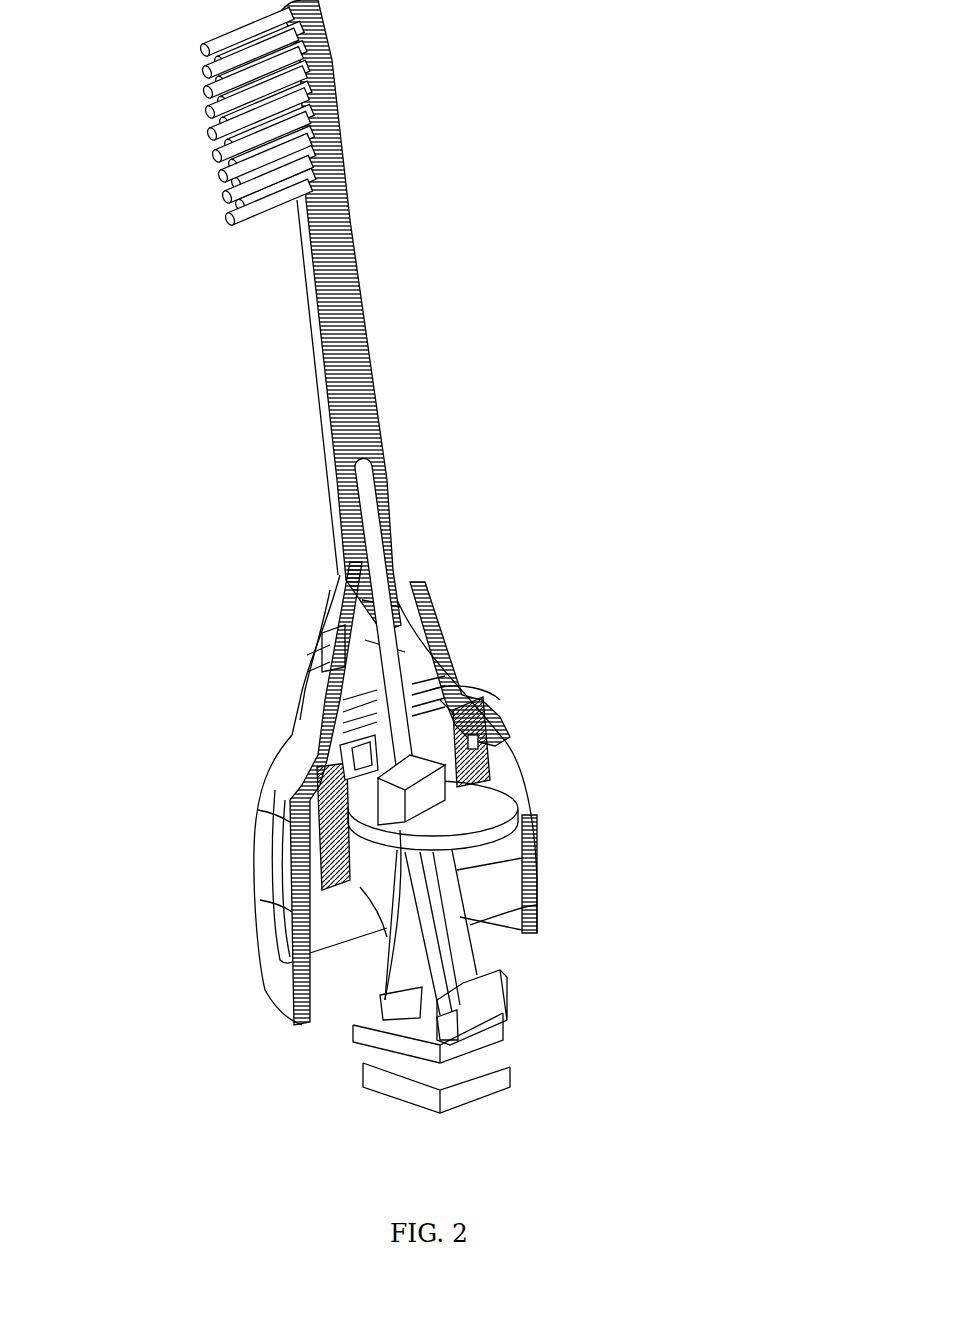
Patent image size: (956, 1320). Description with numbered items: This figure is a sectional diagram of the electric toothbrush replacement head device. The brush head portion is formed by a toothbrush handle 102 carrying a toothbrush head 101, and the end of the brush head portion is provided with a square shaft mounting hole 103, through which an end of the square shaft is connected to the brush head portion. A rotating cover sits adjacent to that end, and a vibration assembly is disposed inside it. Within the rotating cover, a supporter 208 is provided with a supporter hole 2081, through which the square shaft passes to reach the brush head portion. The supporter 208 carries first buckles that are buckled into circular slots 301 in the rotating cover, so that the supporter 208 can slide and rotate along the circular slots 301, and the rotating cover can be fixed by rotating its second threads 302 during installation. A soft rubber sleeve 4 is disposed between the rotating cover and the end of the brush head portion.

The toothbrush head 101 is at (335, 152).
The toothbrush handle 102 is at (373, 406).
The square shaft mounting hole 103 is at (383, 457).
The soft rubber sleeve 4 is at (412, 572).
The circular slots 301 is at (503, 720).
The second threads 302 is at (530, 852).
The supporter 208 is at (440, 782).
The supporter hole 2081 is at (368, 752).